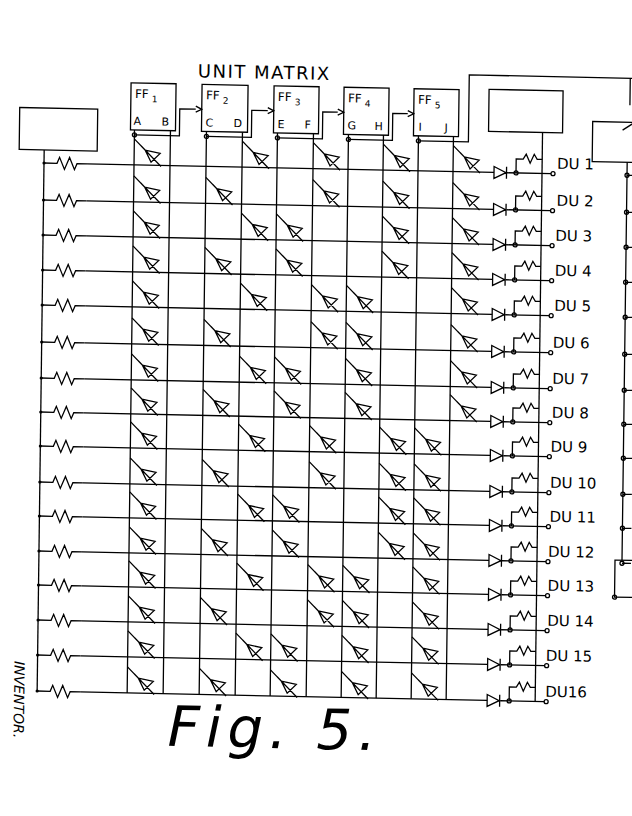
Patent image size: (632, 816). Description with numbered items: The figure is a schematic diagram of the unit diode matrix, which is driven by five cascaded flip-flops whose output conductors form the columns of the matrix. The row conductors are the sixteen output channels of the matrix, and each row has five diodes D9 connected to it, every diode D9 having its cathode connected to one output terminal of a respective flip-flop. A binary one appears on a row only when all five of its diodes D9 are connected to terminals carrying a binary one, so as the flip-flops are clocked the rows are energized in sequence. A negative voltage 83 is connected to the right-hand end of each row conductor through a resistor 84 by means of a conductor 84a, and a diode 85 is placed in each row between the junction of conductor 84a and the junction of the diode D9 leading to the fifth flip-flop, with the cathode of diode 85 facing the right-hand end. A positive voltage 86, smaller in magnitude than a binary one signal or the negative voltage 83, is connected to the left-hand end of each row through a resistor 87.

The negative voltage 83 is at (518, 92).
The resistor 84 is at (531, 256).
The conductor 84a is at (556, 301).
The diode 85 is at (492, 158).
The positive voltage 86 is at (48, 108).
The resistor 87 is at (70, 200).
The diode D9 is at (160, 190).